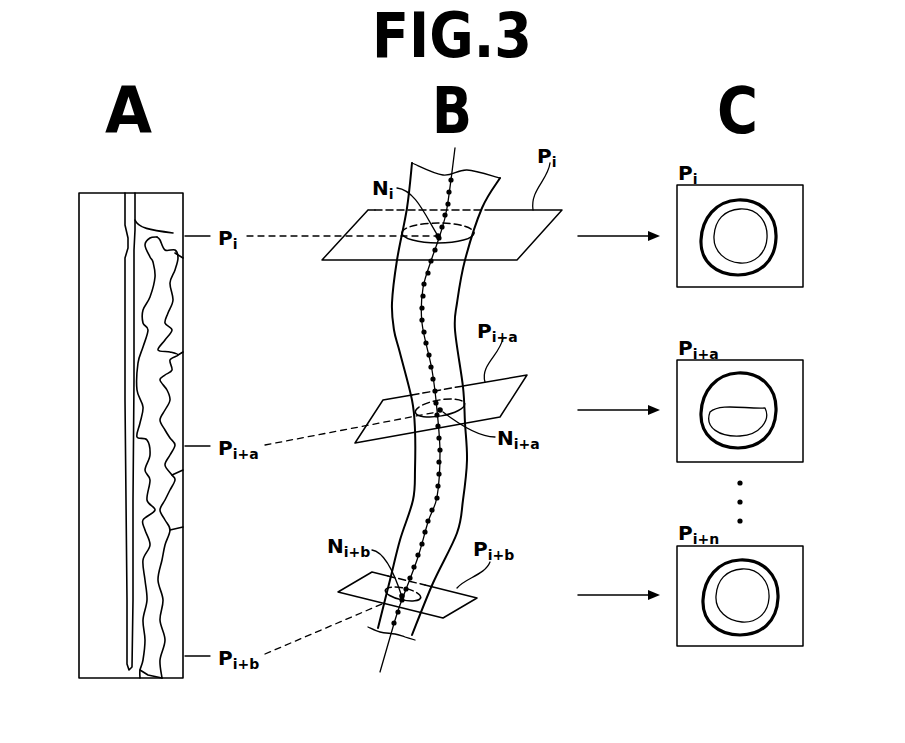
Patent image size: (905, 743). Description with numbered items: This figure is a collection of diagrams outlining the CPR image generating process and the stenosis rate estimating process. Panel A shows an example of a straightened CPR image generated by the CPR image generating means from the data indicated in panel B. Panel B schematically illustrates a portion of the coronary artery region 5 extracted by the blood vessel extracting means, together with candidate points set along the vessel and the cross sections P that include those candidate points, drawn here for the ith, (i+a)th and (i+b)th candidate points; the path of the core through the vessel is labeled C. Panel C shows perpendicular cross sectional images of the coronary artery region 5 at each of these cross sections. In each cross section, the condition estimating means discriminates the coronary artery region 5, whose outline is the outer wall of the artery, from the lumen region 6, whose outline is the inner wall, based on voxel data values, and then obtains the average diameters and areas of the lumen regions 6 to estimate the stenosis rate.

The coronary artery region 5 is at (398, 352).
The lumen region 6 is at (767, 246).
The center line of tubular organ C is at (387, 653).